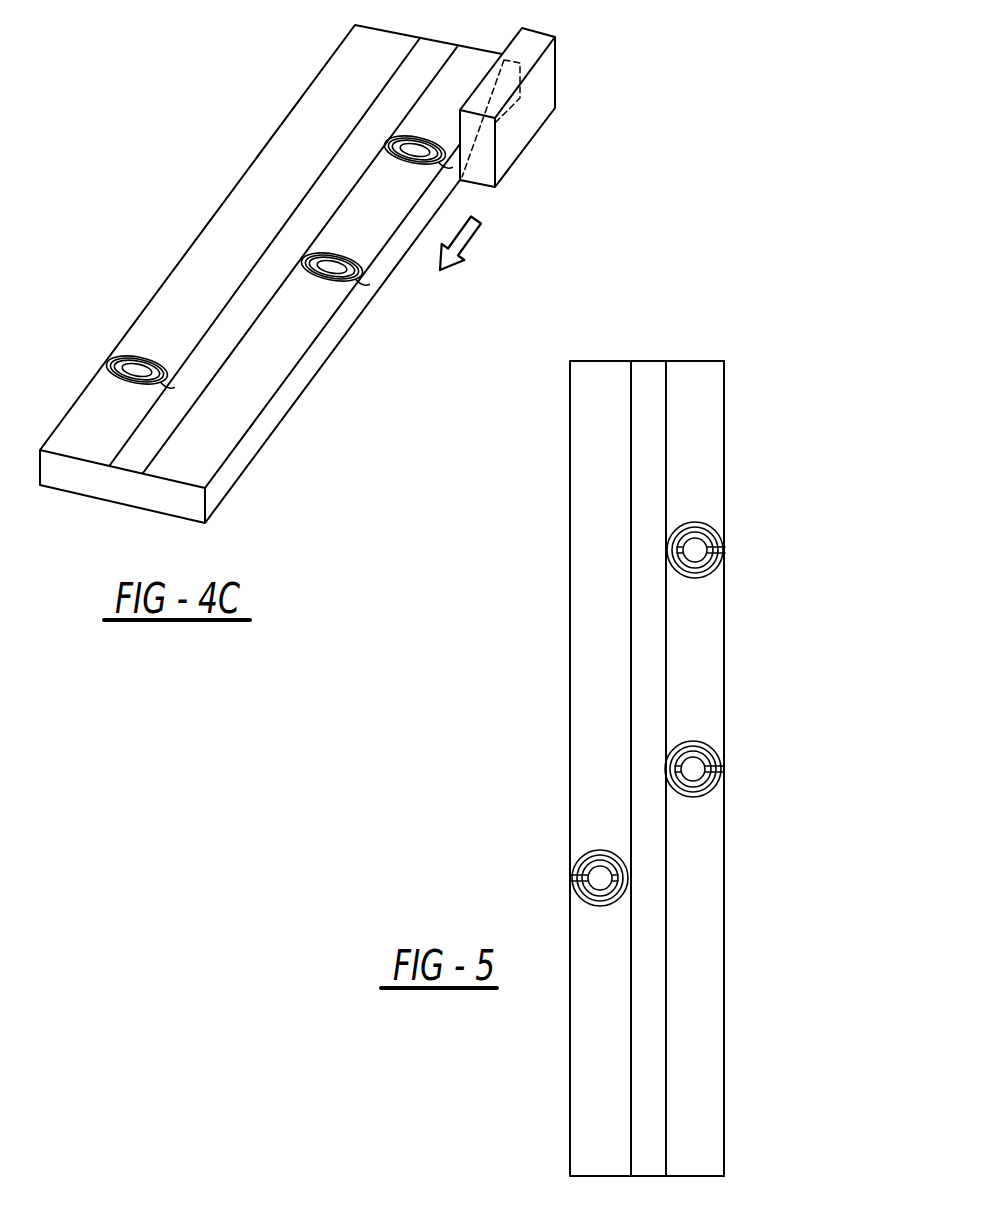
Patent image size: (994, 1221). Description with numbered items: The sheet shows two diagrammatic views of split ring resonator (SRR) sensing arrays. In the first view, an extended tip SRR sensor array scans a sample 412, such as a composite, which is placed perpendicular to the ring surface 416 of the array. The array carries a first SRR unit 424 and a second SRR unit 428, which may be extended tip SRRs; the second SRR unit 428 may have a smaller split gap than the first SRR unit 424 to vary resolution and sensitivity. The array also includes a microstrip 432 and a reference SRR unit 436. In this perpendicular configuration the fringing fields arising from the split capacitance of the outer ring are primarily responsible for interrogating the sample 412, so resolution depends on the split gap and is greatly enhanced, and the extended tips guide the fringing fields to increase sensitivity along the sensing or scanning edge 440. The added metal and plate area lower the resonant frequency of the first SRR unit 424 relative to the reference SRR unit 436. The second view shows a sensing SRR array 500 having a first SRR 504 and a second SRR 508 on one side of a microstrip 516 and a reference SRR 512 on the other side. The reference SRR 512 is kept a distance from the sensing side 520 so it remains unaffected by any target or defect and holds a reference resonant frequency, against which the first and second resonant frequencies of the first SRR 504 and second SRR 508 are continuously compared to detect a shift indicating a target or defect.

In FIG. 4C, the sample 412 is at (538, 113).
In FIG. 4C, the ring surface 416 is at (200, 440).
In FIG. 4C, the first SRR unit 424 is at (332, 280).
In FIG. 4C, the second SRR unit 428 is at (415, 138).
In FIG. 4C, the microstrip 432 is at (245, 287).
In FIG. 4C, the reference SRR unit 436 is at (138, 358).
In FIG. 4C, the sensing or scanning edge 440 is at (287, 393).
In FIG. 5, the sensing SRR array 500 is at (713, 318).
In FIG. 5, the first SRR 504 is at (702, 744).
In FIG. 5, the second SRR 508 is at (714, 572).
In FIG. 5, the reference SRR 512 is at (600, 849).
In FIG. 5, the microstrip 516 is at (638, 653).
In FIG. 5, the sensing side 520 is at (724, 1027).